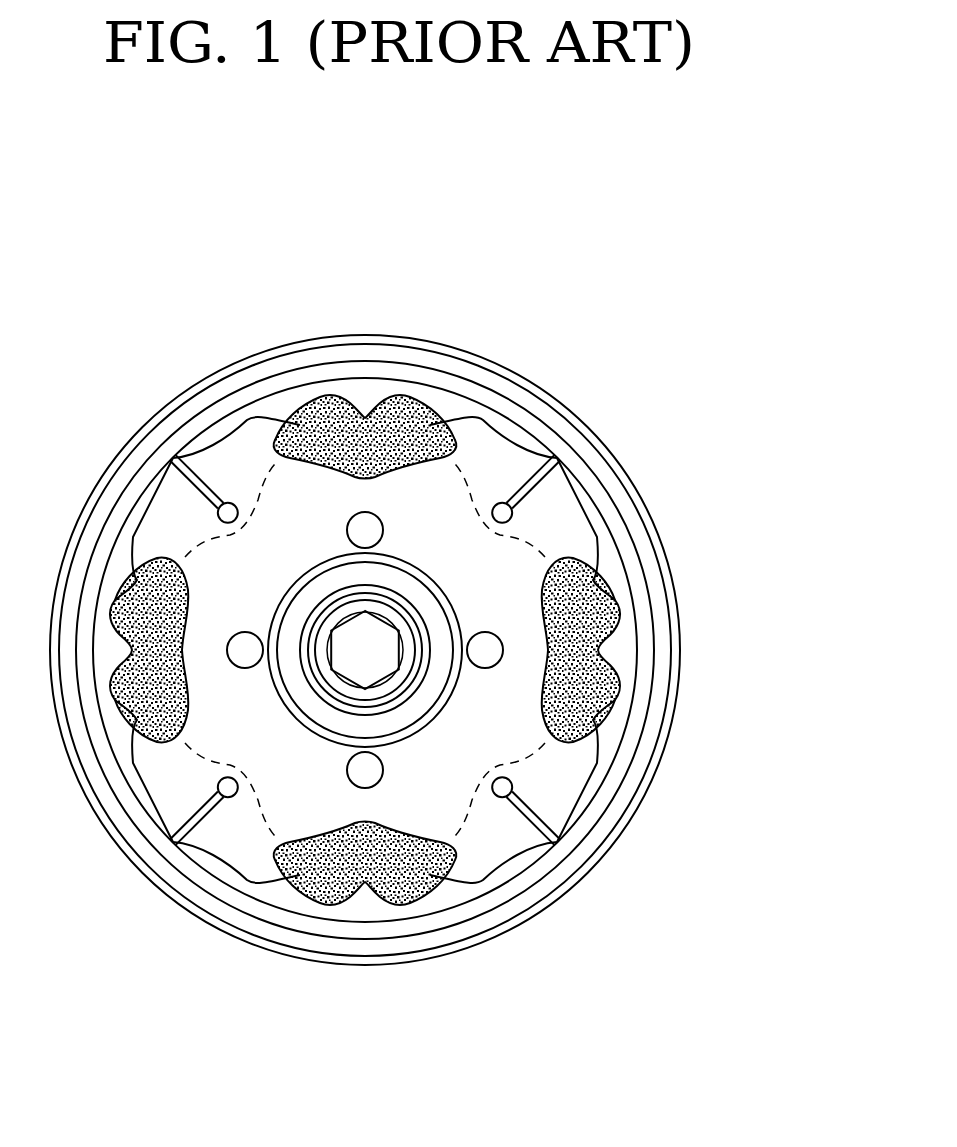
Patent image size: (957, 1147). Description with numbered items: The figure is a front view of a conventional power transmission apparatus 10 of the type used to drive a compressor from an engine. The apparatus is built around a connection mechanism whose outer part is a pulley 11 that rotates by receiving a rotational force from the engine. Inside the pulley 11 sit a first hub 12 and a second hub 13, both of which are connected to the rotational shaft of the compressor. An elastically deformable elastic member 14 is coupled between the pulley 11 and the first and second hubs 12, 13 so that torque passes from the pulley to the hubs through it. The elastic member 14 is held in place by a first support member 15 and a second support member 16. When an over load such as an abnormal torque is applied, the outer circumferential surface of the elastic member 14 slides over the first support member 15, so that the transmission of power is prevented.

The power transmission apparatus 10 is at (653, 301).
The pulley 11 is at (112, 487).
The first hub 12 is at (505, 742).
The second hub 13 is at (423, 603).
The elastic member 14 is at (617, 613).
The first support member 15 is at (433, 413).
The second support member 16 is at (357, 476).